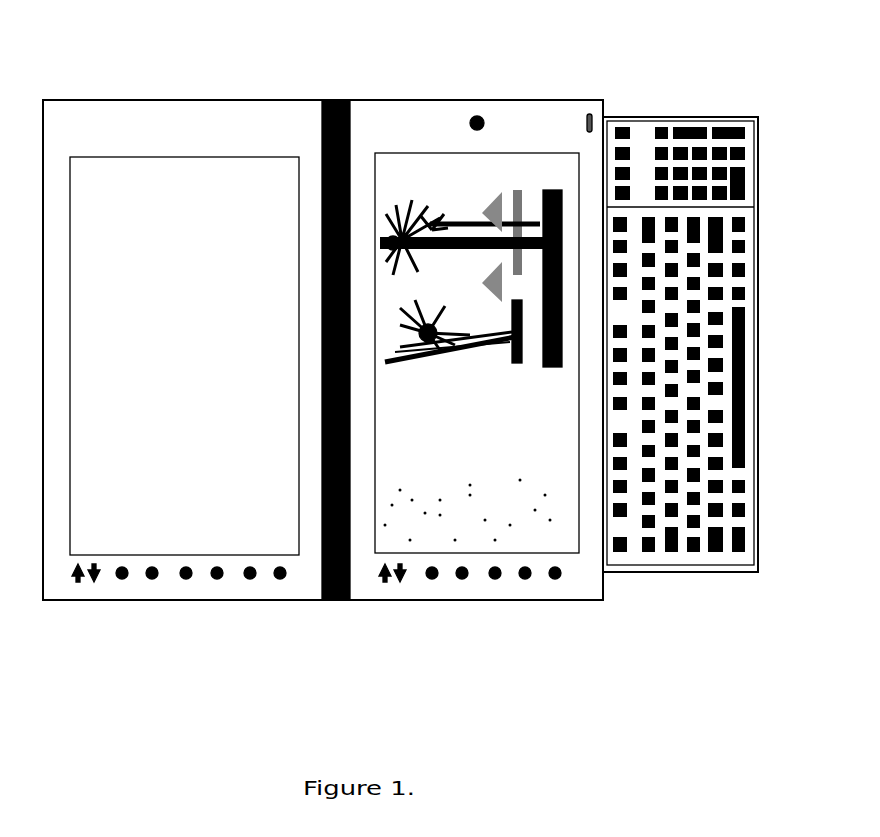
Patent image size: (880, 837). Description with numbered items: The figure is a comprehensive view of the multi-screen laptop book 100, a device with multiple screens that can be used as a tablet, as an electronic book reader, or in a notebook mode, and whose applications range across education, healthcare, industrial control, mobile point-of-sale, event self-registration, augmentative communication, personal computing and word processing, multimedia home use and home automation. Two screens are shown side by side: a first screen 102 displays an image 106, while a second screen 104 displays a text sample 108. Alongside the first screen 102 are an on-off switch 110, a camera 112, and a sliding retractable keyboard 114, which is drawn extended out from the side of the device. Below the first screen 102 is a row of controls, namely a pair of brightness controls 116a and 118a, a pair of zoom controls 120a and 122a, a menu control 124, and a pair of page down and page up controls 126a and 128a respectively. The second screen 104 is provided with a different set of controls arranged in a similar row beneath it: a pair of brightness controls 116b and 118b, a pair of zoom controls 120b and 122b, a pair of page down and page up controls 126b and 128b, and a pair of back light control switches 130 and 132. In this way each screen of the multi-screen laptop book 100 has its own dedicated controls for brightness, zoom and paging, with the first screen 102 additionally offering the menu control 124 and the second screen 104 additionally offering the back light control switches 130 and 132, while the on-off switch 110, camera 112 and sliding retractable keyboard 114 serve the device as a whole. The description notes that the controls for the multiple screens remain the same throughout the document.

The multi-screen laptop book 100 is at (292, 98).
The first screen 102 is at (408, 160).
The second screen 104 is at (123, 168).
The image 106 is at (212, 177).
The text sample 108 is at (508, 185).
The on-off switch 110 is at (593, 112).
The camera 112 is at (479, 116).
The sliding retractable keyboard 114 is at (762, 582).
The brightness control 116a is at (560, 600).
The brightness control 116b is at (220, 600).
The brightness control 118a is at (527, 600).
The brightness control 118b is at (172, 600).
The zoom control 120a is at (493, 600).
The zoom control 120b is at (122, 600).
The zoom control 122a is at (457, 600).
The zoom control 122b is at (110, 600).
The menu control 124 is at (428, 600).
The page down control 126a is at (395, 600).
The page down control 126b is at (85, 600).
The page up control 128a is at (383, 600).
The page up control 128b is at (69, 600).
The back light control switch 130 is at (285, 600).
The back light control switch 132 is at (255, 600).